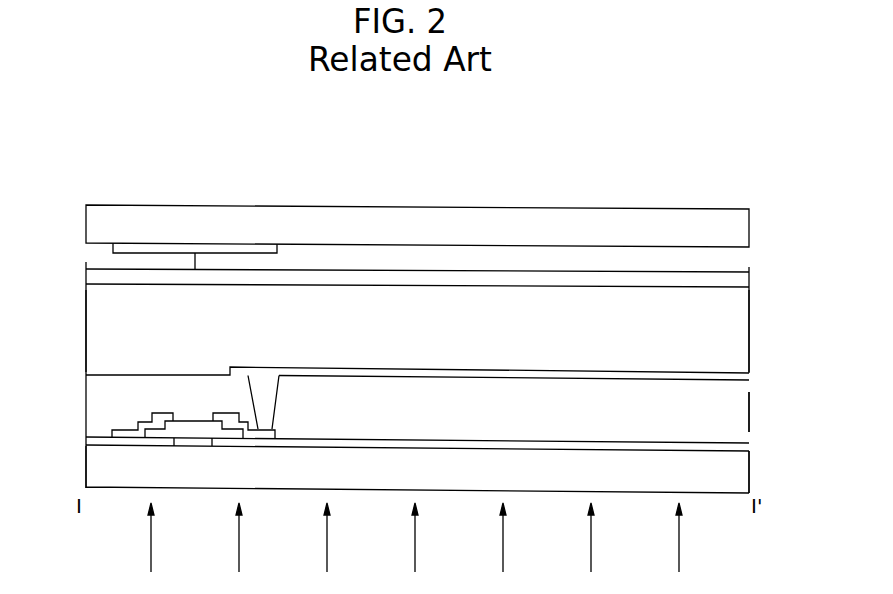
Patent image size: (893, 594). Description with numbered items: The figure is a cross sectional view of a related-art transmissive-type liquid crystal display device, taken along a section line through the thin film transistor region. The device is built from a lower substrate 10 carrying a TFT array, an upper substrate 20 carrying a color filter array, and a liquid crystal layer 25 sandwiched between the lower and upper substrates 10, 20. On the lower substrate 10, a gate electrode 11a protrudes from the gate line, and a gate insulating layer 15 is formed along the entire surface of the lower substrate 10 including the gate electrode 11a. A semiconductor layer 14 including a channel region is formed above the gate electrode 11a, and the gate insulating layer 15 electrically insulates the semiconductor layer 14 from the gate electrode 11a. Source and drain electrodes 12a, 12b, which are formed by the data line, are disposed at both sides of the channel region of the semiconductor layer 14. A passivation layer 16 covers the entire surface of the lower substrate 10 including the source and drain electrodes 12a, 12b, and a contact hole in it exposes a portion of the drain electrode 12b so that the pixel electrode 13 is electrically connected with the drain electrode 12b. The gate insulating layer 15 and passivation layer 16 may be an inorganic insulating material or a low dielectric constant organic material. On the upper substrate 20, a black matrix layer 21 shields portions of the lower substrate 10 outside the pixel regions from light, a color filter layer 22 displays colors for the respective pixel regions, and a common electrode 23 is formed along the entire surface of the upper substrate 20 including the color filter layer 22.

The lower substrate 10 is at (742, 473).
The gate electrode 11a is at (188, 446).
The source electrode 12a is at (160, 416).
The drain electrode 12b is at (267, 438).
The pixel electrode 13 is at (742, 378).
The semiconductor layer 14 is at (230, 438).
The gate insulating layer 15 is at (742, 447).
The passivation layer 16 is at (742, 412).
The upper substrate 20 is at (744, 229).
The black matrix layer 21 is at (262, 248).
The color filter layer 22 is at (744, 260).
The common electrode 23 is at (744, 284).
The liquid crystal layer 25 is at (743, 330).